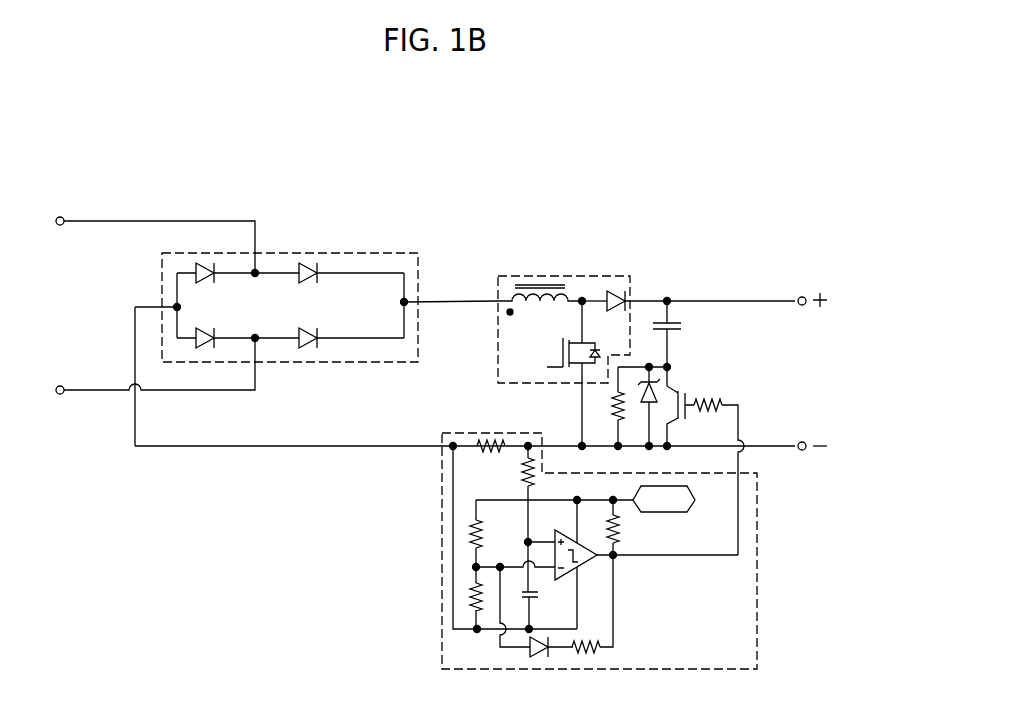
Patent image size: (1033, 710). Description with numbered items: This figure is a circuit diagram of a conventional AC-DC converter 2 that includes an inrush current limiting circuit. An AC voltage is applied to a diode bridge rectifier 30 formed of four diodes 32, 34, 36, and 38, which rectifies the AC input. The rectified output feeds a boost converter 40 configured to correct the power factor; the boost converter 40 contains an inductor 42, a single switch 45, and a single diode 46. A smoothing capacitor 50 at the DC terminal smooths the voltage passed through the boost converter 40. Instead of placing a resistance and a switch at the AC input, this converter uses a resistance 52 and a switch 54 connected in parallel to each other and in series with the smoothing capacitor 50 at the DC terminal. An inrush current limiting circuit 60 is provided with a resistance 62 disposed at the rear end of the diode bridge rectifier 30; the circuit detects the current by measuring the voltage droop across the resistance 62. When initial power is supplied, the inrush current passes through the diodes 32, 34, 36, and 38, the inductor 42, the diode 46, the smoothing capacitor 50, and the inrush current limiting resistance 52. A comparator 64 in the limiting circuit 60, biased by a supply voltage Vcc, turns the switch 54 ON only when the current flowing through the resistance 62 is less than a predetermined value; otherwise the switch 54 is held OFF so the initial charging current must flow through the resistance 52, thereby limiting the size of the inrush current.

The AC-DC converter 2 is at (705, 168).
The diode bridge rectifier 30 is at (409, 253).
The diode 32 is at (310, 287).
The diode 34 is at (305, 331).
The diode 36 is at (208, 287).
The diode 38 is at (203, 331).
The boost converter 40 is at (618, 276).
The inductor 42 is at (548, 304).
The switch 45 is at (573, 341).
The diode 46 is at (623, 291).
The smoothing capacitor 50 is at (681, 329).
The resistance 52 is at (609, 404).
The switch 54 is at (690, 395).
The inrush current limiting circuit 60 is at (441, 549).
The resistance 62 is at (494, 458).
The comparator 64 is at (586, 566).